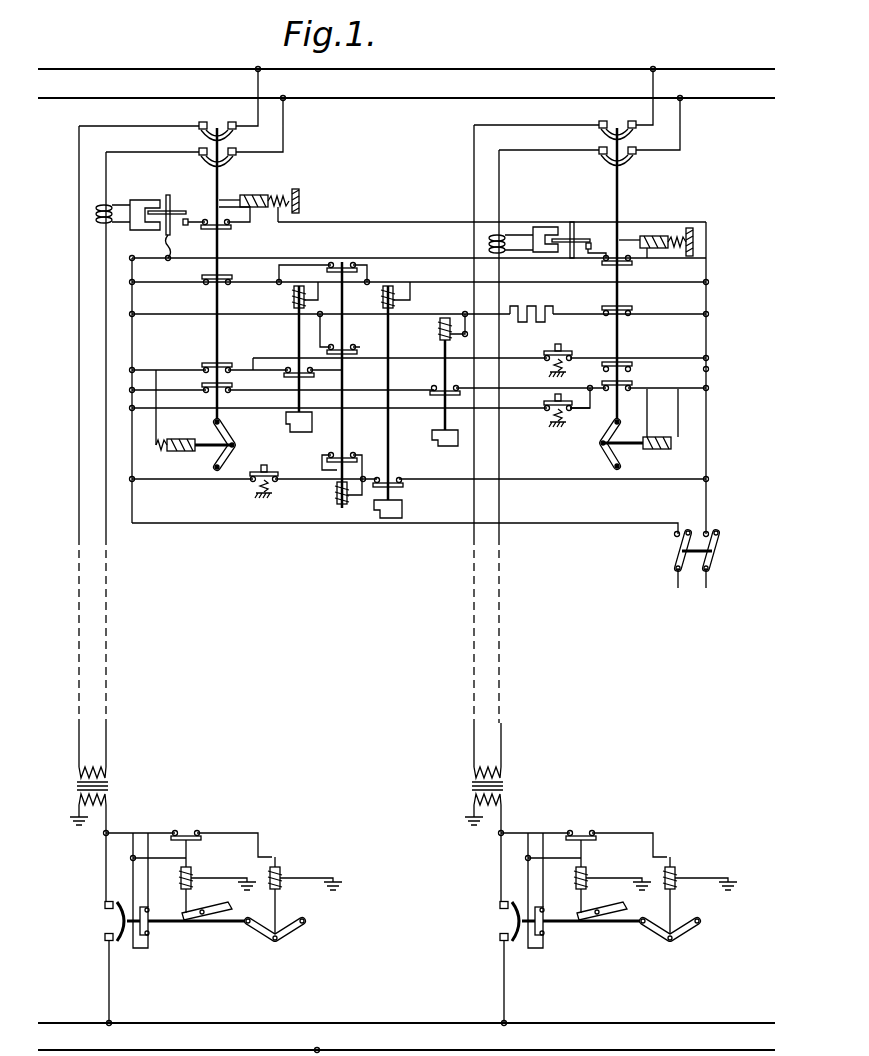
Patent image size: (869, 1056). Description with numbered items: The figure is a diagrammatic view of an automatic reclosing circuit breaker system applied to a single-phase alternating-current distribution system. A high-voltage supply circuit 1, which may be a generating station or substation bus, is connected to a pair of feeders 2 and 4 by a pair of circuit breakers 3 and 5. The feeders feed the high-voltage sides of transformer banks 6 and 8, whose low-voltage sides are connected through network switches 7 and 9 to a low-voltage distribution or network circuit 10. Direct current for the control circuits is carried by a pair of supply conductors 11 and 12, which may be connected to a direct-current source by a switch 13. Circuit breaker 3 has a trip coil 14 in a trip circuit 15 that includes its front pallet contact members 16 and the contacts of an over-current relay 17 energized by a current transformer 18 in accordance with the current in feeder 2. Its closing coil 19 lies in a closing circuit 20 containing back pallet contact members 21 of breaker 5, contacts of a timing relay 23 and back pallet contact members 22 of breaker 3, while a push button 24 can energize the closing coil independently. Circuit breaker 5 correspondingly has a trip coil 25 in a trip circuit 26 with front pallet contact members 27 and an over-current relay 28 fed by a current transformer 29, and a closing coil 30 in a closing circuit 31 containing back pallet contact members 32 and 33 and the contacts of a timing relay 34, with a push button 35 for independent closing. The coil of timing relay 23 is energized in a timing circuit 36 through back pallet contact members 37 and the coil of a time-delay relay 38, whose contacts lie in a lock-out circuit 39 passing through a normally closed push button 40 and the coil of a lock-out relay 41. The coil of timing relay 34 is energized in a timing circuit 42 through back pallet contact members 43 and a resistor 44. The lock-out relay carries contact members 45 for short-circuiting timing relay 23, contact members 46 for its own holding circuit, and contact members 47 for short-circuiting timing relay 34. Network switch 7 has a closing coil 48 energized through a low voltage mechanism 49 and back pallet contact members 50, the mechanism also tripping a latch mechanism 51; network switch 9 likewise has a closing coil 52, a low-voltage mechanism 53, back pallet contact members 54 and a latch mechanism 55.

The high-voltage supply circuit 1 is at (432, 97).
The feeder 2 is at (106, 418).
The circuit breaker 3 is at (214, 186).
The feeder 4 is at (466, 549).
The circuit breaker 5 is at (606, 275).
The transformer bank 6 is at (135, 792).
The network switch 7 is at (242, 926).
The transformer bank 8 is at (497, 778).
The network switch 9 is at (621, 934).
The low voltage distribution or network circuit 10 is at (364, 1049).
The supply conductor 11 is at (312, 526).
The supply conductor 12 is at (712, 505).
The switch 13 is at (720, 550).
The trip coil 14 is at (266, 198).
The trip circuit 15 is at (386, 221).
The front pallet contact members 16 is at (232, 226).
The over-current relay 17 is at (158, 192).
The current transformer 18 is at (104, 200).
The closing coil 19 is at (174, 455).
The closing circuit 20 is at (436, 372).
The back pallet contact members 21 is at (630, 365).
The back pallet contact members 22 is at (226, 364).
The timing relay 23 is at (296, 350).
The push button 24 is at (548, 350).
The trip coil 25 is at (662, 260).
The trip circuit 26 is at (415, 257).
The front pallet contact members 27 is at (604, 262).
The over-current relay 28 is at (578, 238).
The current transformer 29 is at (490, 240).
The closing coil 30 is at (656, 450).
The closing circuit 31 is at (541, 387).
The back pallet contact members 32 is at (605, 383).
The back pallet contact members 33 is at (236, 386).
The timing relay 34 is at (452, 433).
The push button 35 is at (545, 404).
The timing circuit 36 is at (464, 284).
The back pallet contact members 37 is at (204, 278).
The time-delay relay 38 is at (392, 288).
The lock-out circuit 39 is at (406, 482).
The push button 40 is at (263, 472).
The lock-out relay 41 is at (313, 419).
The timing circuit 42 is at (242, 314).
The back pallet contact members 43 is at (630, 310).
The resistor 44 is at (530, 310).
The contact members 45 is at (346, 263).
The contact members 46 is at (352, 454).
The contact members 47 is at (350, 346).
The closing coil 48 is at (282, 867).
The low voltage mechanism 49 is at (192, 858).
The back pallet contact members 50 is at (150, 915).
The latch mechanism 51 is at (222, 903).
The closing coil 52 is at (700, 891).
The low-voltage mechanism 53 is at (608, 872).
The back pallet contact members 54 is at (535, 914).
The latch mechanism 55 is at (602, 900).